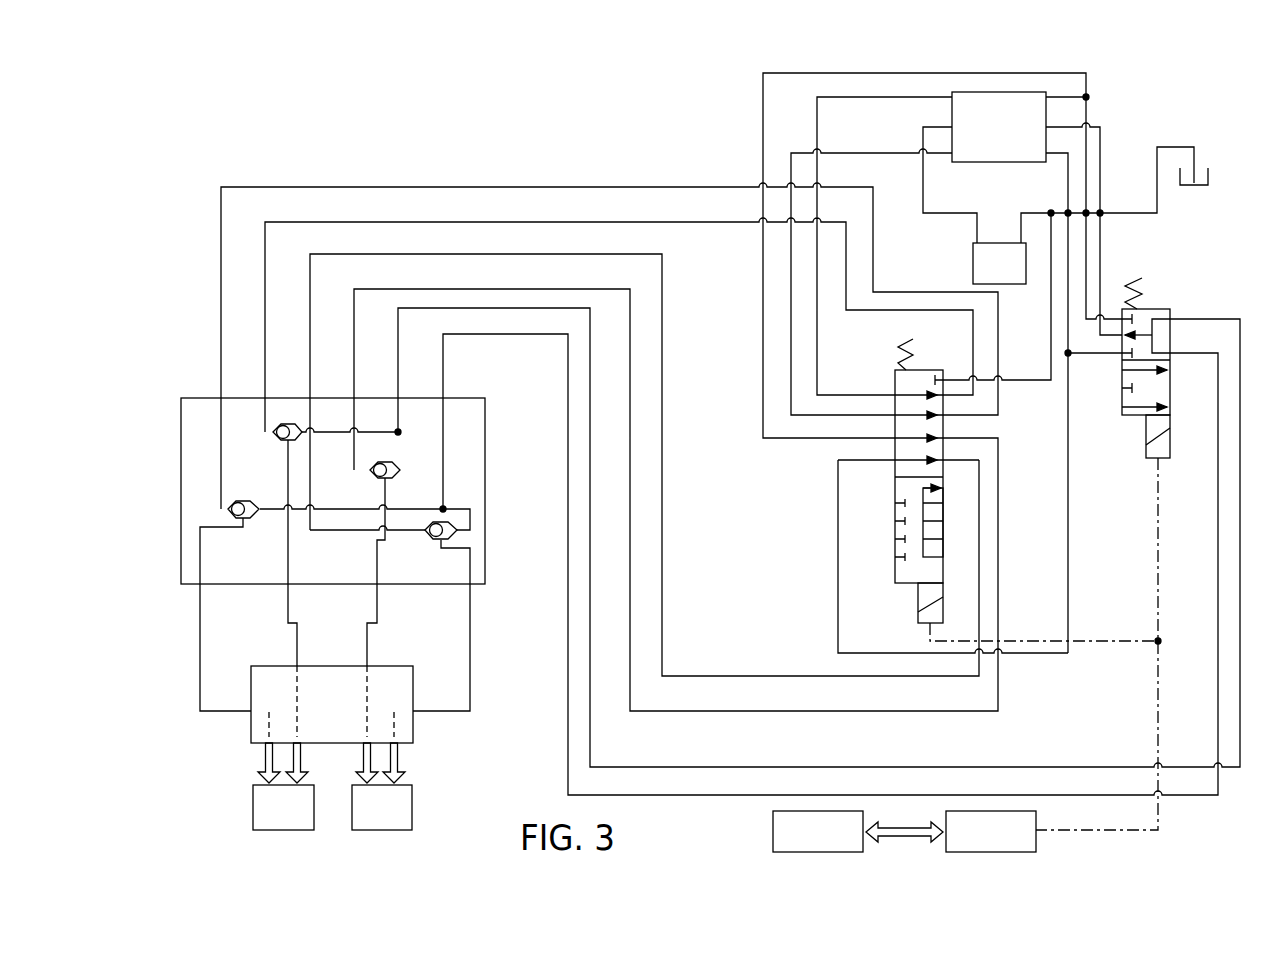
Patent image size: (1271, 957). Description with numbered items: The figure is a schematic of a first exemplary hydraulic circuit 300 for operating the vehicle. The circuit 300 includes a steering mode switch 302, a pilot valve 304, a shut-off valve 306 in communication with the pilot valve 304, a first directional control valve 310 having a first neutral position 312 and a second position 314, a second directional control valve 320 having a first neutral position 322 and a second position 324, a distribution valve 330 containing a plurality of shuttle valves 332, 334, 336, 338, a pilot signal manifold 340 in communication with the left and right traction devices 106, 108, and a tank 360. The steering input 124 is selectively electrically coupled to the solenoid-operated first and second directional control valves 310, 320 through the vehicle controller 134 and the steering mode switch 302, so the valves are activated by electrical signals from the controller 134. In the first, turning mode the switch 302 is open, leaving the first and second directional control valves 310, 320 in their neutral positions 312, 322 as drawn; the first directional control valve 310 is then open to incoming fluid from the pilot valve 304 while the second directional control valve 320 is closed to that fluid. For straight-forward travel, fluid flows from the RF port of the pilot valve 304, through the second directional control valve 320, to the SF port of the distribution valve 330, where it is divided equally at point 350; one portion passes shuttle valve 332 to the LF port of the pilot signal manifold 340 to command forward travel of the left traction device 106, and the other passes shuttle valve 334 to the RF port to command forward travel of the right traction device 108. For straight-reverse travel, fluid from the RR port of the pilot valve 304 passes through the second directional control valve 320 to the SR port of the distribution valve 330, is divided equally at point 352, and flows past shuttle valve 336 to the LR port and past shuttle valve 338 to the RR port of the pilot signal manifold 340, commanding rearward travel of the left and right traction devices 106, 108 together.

The hydraulic circuit 300 is at (1125, 99).
The steering mode switch 302 is at (1160, 705).
The pilot valve 304 is at (1012, 138).
The shut-off valve 306 is at (1012, 280).
The first directional control valve 310 is at (953, 496).
The first neutral position 312 is at (895, 385).
The second position 314 is at (900, 482).
The second directional control valve 320 is at (1154, 380).
The first neutral position 322 is at (1170, 312).
The second position 324 is at (1165, 398).
The distribution valve 330 is at (485, 470).
The shuttle valve 332 is at (275, 441).
The shuttle valve 334 is at (373, 478).
The shuttle valve 336 is at (243, 520).
The shuttle valve 338 is at (430, 540).
The pilot signal manifold 340 is at (345, 715).
The point 350 is at (400, 435).
The point 352 is at (445, 507).
The tank 360 is at (1210, 178).
The left traction device 106 is at (297, 816).
The right traction device 108 is at (395, 816).
The steering input 124 is at (831, 843).
The vehicle controller 134 is at (1004, 843).